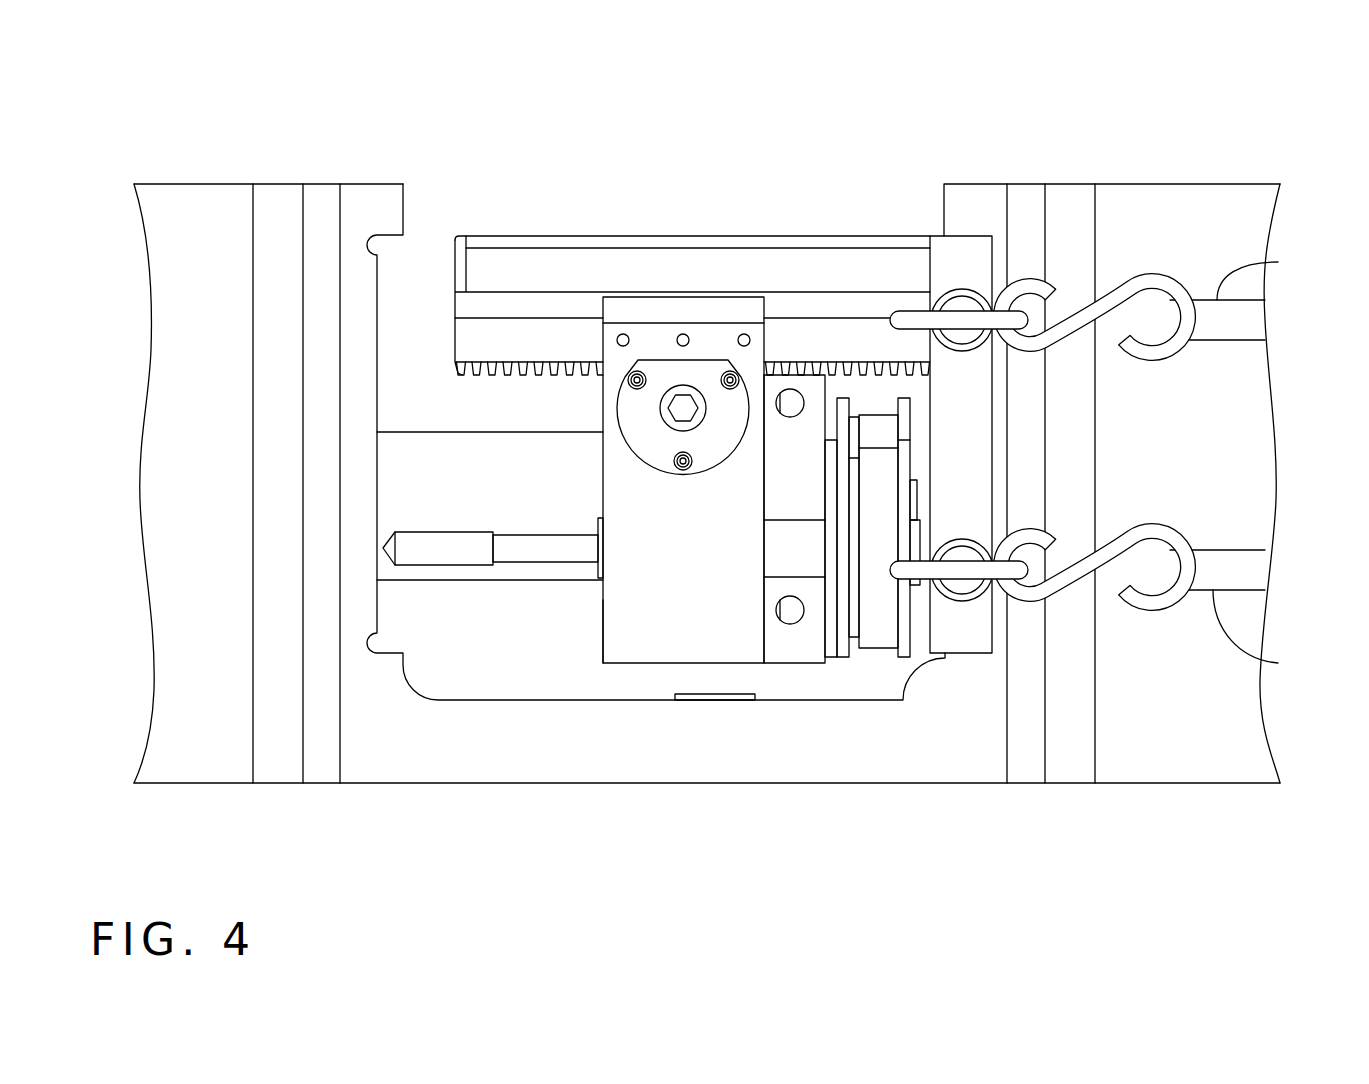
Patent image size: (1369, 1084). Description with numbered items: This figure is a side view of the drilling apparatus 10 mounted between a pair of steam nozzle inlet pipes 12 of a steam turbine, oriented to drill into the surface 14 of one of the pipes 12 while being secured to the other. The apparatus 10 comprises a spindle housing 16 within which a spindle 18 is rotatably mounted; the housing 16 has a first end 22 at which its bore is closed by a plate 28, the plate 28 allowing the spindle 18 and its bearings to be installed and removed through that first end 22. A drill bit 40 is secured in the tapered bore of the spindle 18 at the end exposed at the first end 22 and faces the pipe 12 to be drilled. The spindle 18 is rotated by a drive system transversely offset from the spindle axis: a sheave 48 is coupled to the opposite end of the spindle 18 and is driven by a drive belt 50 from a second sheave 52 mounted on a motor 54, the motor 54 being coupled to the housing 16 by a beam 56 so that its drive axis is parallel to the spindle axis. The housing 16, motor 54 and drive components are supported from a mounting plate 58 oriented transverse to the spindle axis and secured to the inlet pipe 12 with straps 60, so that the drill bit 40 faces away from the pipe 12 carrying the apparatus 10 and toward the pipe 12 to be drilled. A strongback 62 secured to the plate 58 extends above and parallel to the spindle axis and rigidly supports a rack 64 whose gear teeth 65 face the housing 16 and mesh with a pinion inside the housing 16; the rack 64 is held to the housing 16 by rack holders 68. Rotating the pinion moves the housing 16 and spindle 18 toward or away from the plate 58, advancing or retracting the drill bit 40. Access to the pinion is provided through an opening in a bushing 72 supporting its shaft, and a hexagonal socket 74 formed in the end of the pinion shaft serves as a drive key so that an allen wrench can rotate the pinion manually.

The drilling apparatus 10 is at (814, 128).
The steam nozzle inlet pipes 12 is at (212, 212).
The surface 14 is at (380, 298).
The spindle housing 16 is at (703, 627).
The spindle 18 is at (600, 525).
The first end 22 is at (601, 395).
The plate 28 is at (603, 628).
The drill bit 40 is at (460, 567).
The sheave 48 is at (903, 657).
The drive belt 50 is at (879, 623).
The sheave 52 is at (843, 440).
The motor 54 is at (467, 432).
The beam 56 is at (802, 648).
The mounting plate 58 is at (973, 262).
The straps 60 is at (1220, 292).
The strongback 62 is at (582, 236).
The rack 64 is at (545, 354).
The gear teeth 65 is at (470, 378).
The rack holders 68 is at (500, 303).
The bushing 72 is at (645, 440).
The hexagonal socket 74 is at (692, 403).